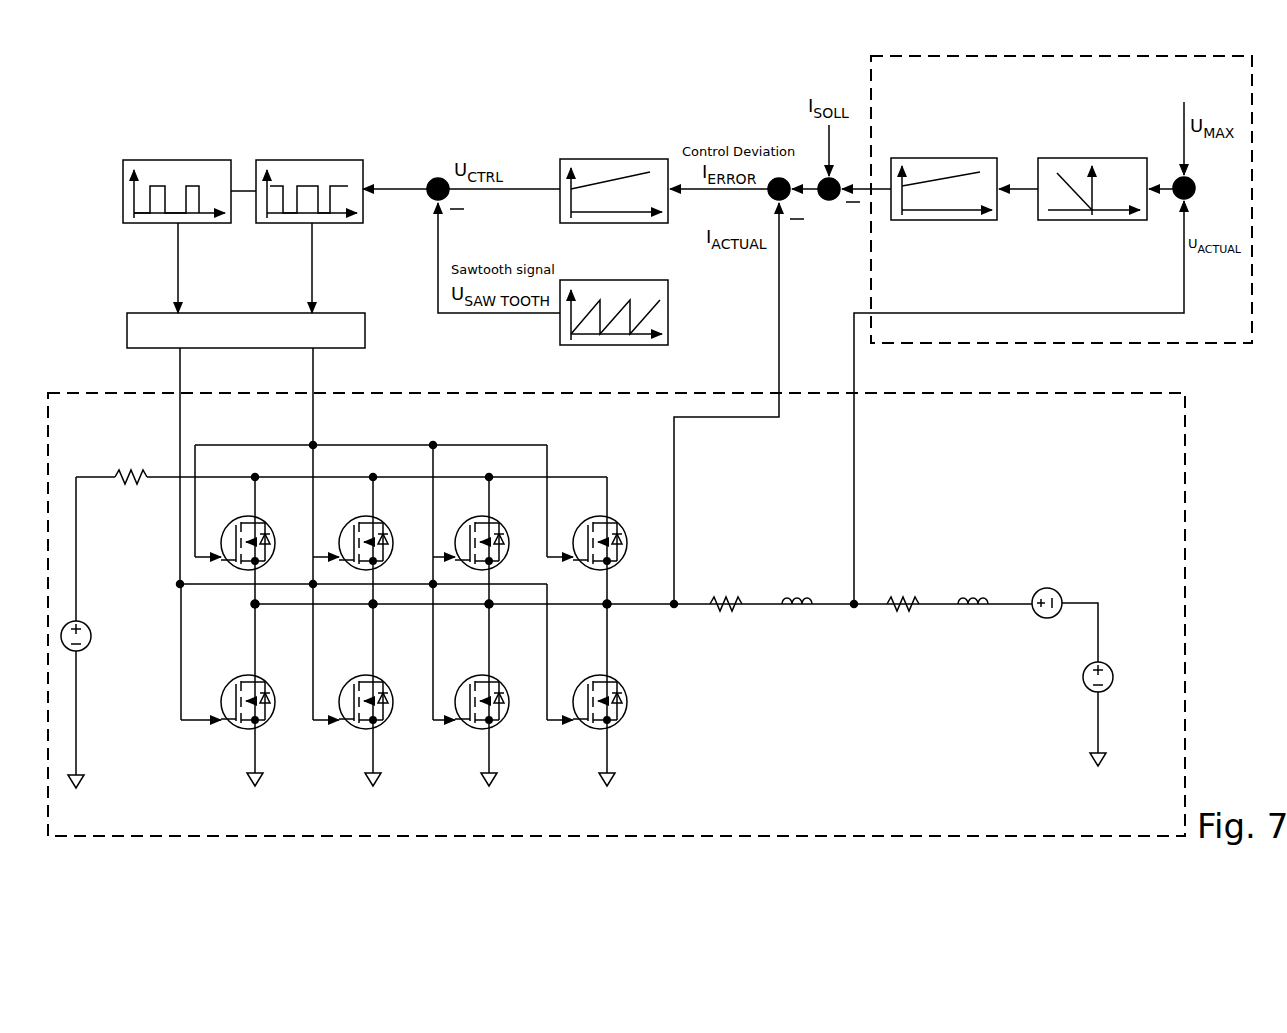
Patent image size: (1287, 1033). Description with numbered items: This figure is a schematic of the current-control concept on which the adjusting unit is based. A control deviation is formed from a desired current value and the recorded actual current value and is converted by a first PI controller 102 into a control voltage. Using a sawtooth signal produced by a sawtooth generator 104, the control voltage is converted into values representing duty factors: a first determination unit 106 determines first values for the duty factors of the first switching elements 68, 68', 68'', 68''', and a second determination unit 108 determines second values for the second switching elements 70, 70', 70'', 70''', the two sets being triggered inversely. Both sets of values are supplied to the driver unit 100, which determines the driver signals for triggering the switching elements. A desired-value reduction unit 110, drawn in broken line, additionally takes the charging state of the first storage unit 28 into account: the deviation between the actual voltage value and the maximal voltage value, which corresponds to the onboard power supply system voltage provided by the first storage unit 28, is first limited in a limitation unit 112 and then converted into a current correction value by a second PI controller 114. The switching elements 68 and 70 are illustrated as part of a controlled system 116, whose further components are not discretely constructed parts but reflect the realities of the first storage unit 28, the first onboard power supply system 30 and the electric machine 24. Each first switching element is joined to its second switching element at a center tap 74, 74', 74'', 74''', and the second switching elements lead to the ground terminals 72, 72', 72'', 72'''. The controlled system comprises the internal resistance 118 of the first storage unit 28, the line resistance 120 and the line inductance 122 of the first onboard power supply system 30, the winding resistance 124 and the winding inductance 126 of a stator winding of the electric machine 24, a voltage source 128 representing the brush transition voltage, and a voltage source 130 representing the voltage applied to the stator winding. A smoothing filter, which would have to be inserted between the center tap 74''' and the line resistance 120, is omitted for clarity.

The electric machine 24 is at (1030, 624).
The first storage unit 28 is at (92, 636).
The first onboard power supply system 30 is at (759, 578).
The first switching element 68 is at (258, 540).
The first switching element 68' is at (379, 540).
The first switching element 68'' is at (497, 540).
The first switching element 68''' is at (617, 540).
The second switching element 70 is at (260, 688).
The second switching element 70' is at (380, 688).
The second switching element 70'' is at (499, 688).
The second switching element 70''' is at (620, 688).
The ground connection 72 is at (287, 804).
The ground connection 72' is at (407, 804).
The ground connection 72'' is at (526, 804).
The ground connection 72''' is at (647, 804).
The center tap 74 is at (271, 636).
The center tap 74' is at (390, 636).
The center tap 74'' is at (509, 636).
The center tap 74''' is at (630, 636).
The driver unit 100 is at (365, 330).
The first PI controller 102 is at (633, 158).
The sawtooth generator 104 is at (633, 280).
The first determination unit 106 is at (308, 158).
The second determination unit 108 is at (176, 158).
The desired-value reduction unit 110 is at (1205, 346).
The limitation unit 112 is at (1085, 222).
The second PI controller 114 is at (936, 224).
The controlled system 116 is at (1185, 546).
The internal resistance 118 is at (135, 470).
The line resistance 120 is at (720, 612).
The line inductance 122 is at (792, 612).
The winding resistance 124 is at (900, 612).
The winding inductance 126 is at (970, 612).
The voltage source 128 is at (1047, 620).
The voltage source 130 is at (1114, 677).